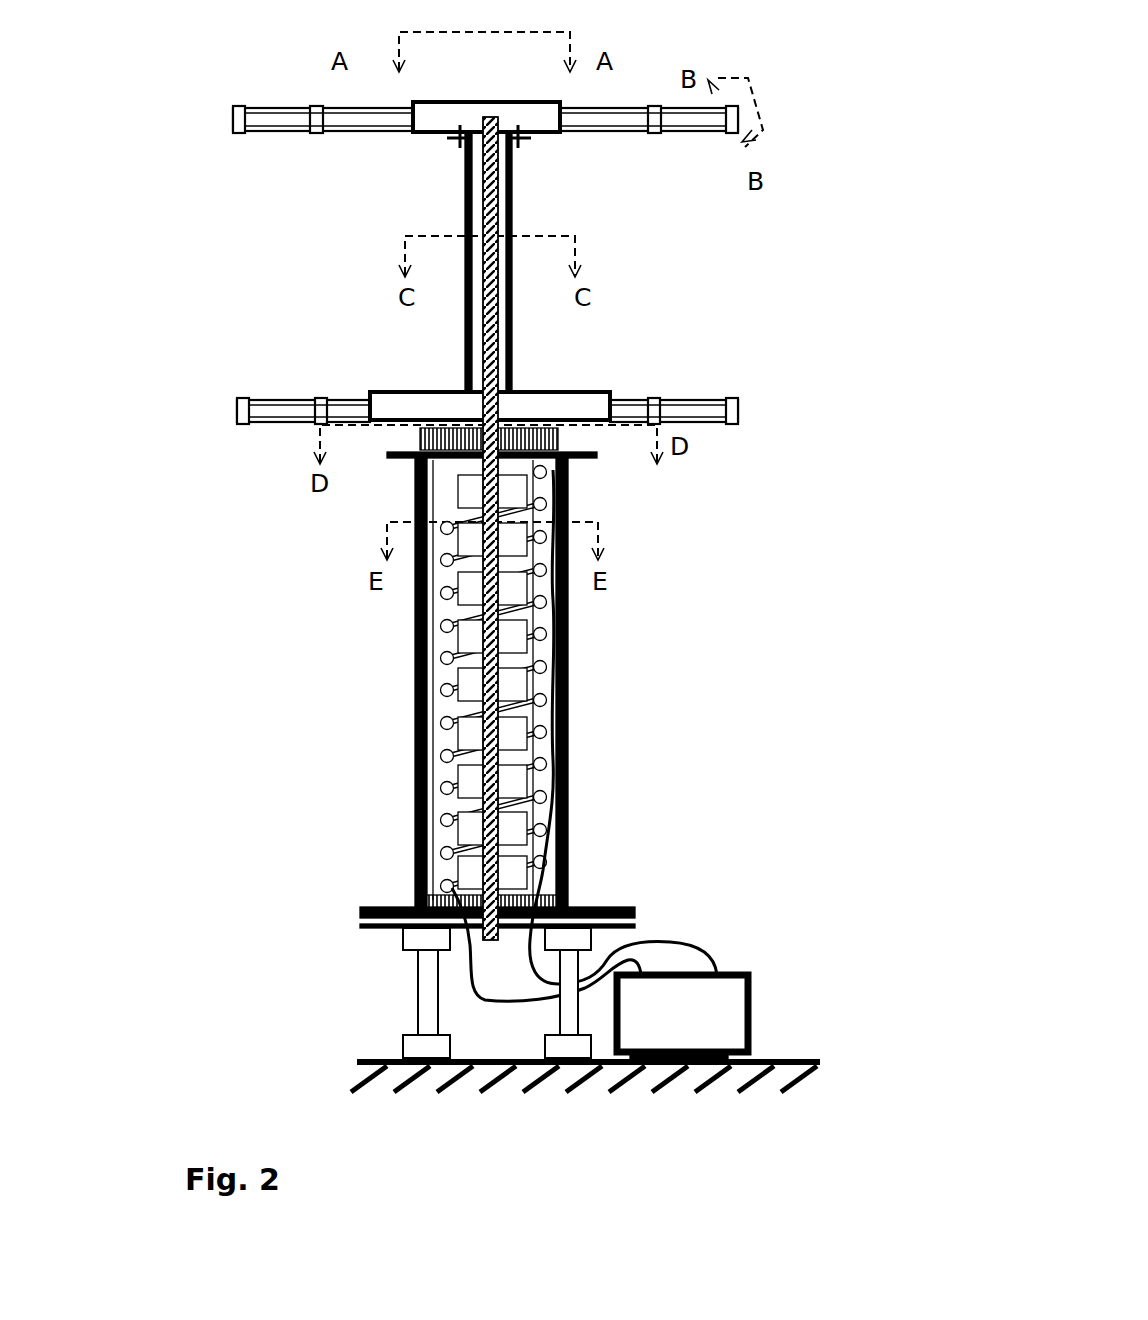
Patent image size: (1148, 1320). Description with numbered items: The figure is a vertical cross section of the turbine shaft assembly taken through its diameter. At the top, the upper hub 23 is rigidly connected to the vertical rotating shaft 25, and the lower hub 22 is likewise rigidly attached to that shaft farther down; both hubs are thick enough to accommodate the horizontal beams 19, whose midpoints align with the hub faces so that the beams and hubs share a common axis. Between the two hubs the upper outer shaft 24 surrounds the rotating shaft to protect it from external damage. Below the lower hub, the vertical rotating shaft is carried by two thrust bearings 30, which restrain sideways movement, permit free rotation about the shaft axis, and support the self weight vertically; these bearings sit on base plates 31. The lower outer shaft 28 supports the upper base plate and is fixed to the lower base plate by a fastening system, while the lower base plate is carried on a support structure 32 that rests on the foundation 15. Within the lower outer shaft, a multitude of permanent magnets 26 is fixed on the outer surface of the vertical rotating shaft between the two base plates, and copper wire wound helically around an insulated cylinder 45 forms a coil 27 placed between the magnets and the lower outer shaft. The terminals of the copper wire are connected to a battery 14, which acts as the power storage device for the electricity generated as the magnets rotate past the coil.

The battery 14 is at (755, 998).
The foundation 15 is at (773, 1085).
The horizontal beams 19 is at (247, 399).
The lower hub 22 is at (385, 393).
The upper hub 23 is at (440, 123).
The upper outer shaft 24 is at (513, 193).
The vertical rotating shaft 25 is at (500, 357).
The permanent magnets 26 is at (482, 684).
The coil 27 is at (545, 507).
The lower outer shaft 28 is at (570, 627).
The thrust bearings 30 is at (563, 446).
The base plates 31 is at (400, 459).
The support structure 32 is at (417, 990).
The insulated cylinder 45 is at (391, 679).